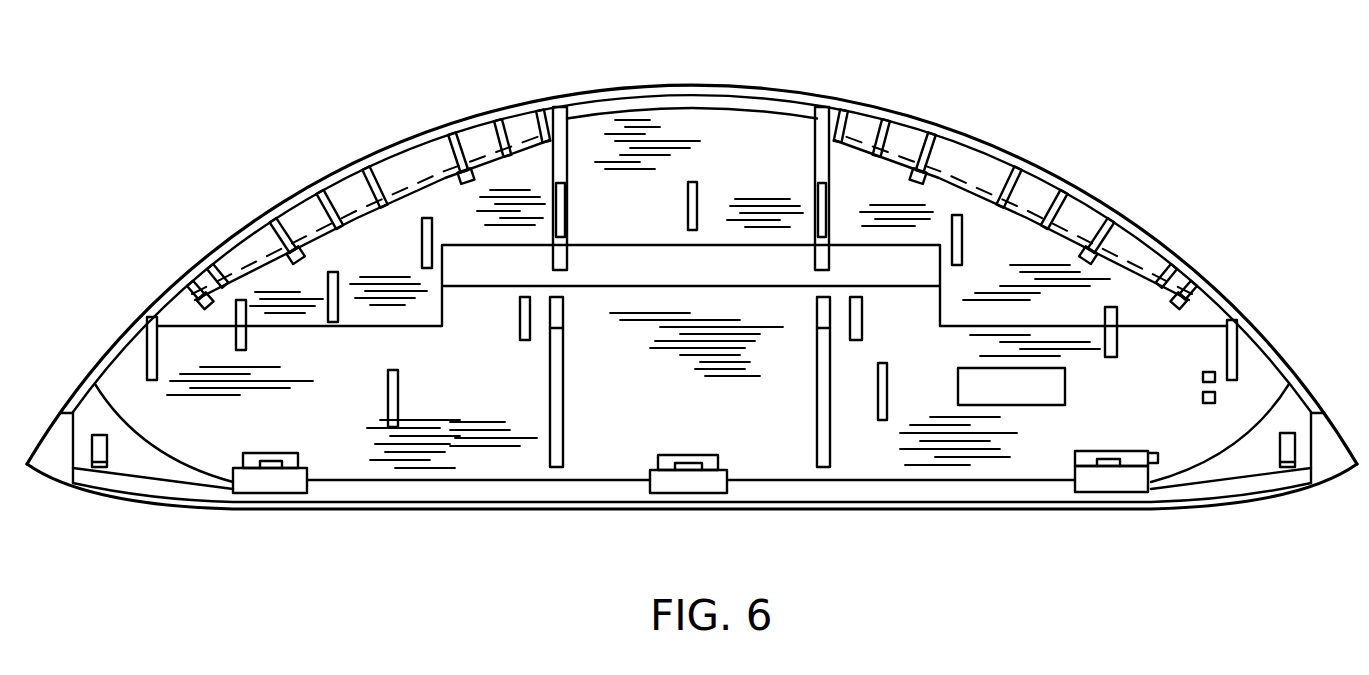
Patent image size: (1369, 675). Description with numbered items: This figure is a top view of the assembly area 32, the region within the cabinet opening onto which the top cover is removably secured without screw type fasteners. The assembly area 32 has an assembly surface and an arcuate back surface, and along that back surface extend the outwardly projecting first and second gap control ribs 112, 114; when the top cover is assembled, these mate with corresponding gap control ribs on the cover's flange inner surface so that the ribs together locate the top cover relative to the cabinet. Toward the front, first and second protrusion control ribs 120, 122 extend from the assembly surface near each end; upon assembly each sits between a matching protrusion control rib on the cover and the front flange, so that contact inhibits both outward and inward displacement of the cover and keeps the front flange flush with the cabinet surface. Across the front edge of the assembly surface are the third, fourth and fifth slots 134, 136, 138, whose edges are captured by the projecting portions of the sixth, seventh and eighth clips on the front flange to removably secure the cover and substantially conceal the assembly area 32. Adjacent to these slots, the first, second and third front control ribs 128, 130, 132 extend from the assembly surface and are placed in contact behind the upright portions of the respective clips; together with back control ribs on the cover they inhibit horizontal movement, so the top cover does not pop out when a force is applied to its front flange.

The assembly area 32 is at (738, 120).
The first gap control rib 112 is at (358, 186).
The second gap control rib 114 is at (1023, 190).
The first protrusion control rib 120 is at (93, 462).
The second protrusion control rib 122 is at (1280, 452).
The first front control rib 128 is at (290, 455).
The second front control rib 130 is at (708, 455).
The third front control rib 132 is at (1130, 453).
The third slot 134 is at (244, 483).
The fourth slot 136 is at (665, 485).
The fifth slot 138 is at (1092, 485).